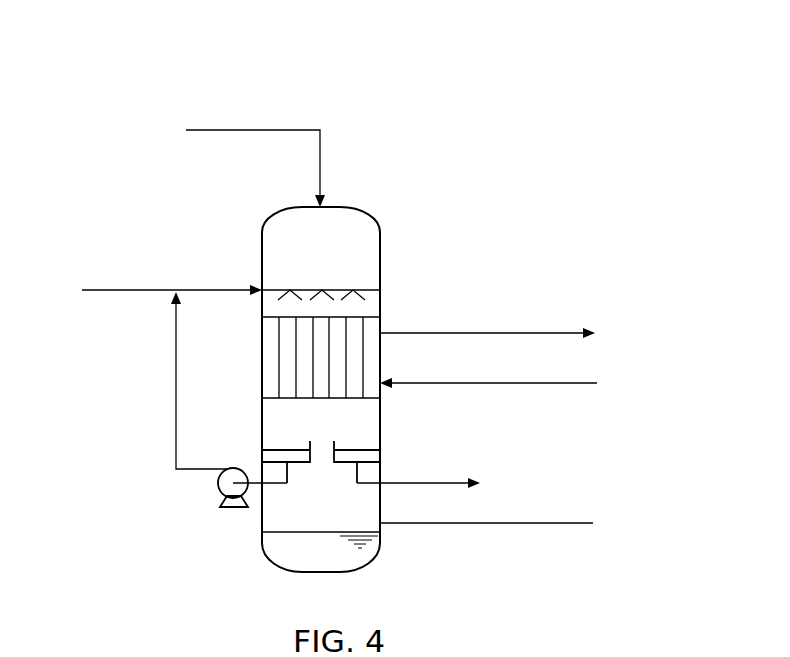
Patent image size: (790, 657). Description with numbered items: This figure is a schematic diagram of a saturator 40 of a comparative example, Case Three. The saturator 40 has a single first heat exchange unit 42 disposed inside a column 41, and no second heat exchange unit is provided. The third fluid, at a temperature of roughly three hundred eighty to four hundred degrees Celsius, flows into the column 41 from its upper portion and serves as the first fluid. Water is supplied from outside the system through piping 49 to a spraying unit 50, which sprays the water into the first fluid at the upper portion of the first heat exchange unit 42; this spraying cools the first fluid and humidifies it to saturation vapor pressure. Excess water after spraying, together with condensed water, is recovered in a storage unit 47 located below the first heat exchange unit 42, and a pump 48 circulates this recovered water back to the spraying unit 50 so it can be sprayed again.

The saturator 40 is at (330, 84).
The column 41 is at (360, 210).
The first heat exchange unit 42 is at (383, 350).
The storage unit 47 is at (266, 451).
The pump 48 is at (219, 481).
The piping 49 is at (111, 290).
The spraying unit 50 is at (323, 290).